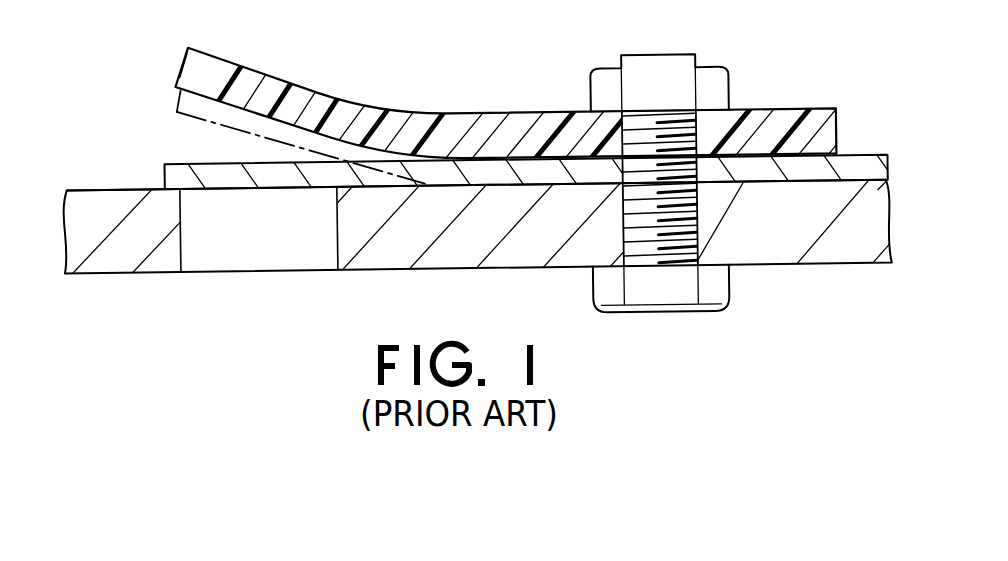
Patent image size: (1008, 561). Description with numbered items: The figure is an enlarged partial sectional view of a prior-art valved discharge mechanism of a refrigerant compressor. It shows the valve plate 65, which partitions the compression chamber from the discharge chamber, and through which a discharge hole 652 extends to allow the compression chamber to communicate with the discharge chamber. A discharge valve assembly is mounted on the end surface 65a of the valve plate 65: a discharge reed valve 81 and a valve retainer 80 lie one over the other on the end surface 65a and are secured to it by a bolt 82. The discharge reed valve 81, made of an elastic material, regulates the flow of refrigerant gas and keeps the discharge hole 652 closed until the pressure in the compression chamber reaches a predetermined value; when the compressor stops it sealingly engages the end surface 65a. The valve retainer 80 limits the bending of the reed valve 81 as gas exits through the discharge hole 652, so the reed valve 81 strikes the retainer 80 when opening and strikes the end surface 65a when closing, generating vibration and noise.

The valve plate 65 is at (788, 222).
The end surface of valve plate 65a is at (127, 188).
The discharge hole 652 is at (258, 243).
The valve retainer 80 is at (332, 103).
The discharge reed valve 81 is at (484, 163).
The bolt 82 is at (681, 88).